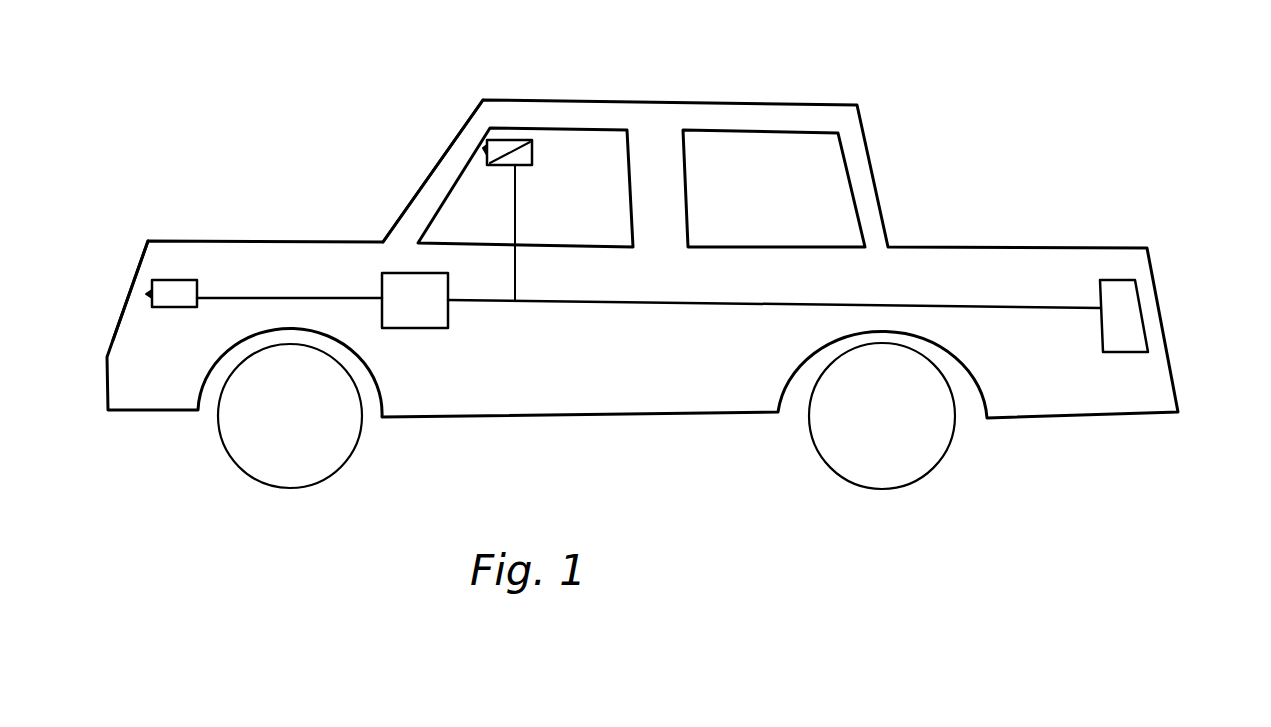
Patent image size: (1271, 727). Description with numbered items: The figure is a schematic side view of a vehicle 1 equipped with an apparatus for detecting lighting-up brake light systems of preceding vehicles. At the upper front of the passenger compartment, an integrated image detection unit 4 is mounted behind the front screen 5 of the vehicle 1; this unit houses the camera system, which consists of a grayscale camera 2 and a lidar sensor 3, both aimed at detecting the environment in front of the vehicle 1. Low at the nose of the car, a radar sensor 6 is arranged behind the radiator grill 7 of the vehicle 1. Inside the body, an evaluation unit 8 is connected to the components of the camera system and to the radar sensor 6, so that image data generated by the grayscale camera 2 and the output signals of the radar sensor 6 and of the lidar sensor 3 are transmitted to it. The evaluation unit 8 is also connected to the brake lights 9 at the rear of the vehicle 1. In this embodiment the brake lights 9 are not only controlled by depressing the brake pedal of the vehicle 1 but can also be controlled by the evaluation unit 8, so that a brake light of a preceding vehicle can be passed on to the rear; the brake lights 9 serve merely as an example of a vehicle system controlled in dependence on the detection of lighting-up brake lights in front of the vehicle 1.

The vehicle 1 is at (610, 85).
The grayscale camera 2 is at (487, 142).
The lidar sensor 3 is at (520, 140).
The integrated image detection unit 4 is at (532, 150).
The front screen 5 is at (420, 180).
The radar sensor 6 is at (175, 290).
The radiator grill 7 is at (135, 262).
The evaluation unit 8 is at (418, 310).
The brake lights 9 is at (1127, 325).